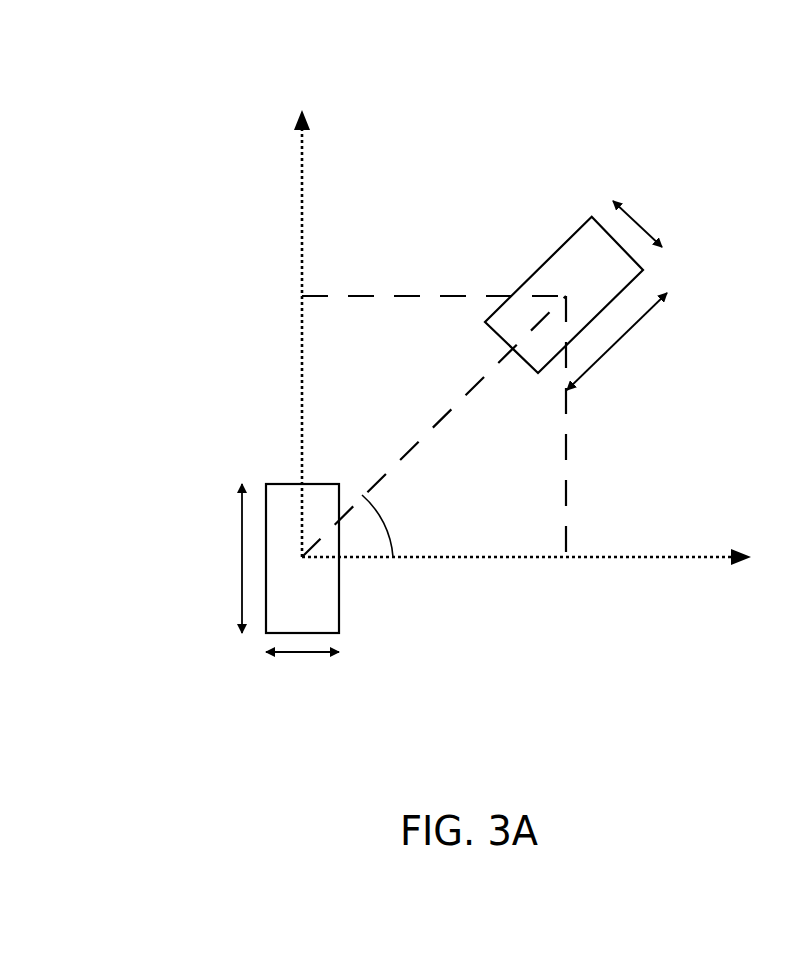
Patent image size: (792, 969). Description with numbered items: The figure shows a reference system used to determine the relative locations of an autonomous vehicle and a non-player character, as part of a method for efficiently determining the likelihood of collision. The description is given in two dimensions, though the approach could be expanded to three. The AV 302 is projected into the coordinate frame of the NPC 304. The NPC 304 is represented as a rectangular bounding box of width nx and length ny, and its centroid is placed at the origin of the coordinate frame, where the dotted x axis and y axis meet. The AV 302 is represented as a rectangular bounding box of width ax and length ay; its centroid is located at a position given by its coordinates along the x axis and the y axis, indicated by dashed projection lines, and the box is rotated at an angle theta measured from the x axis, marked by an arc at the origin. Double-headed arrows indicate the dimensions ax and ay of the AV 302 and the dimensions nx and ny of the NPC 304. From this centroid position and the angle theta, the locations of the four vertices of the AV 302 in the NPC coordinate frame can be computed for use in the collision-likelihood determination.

The AV 302 is at (562, 219).
The NPC 304 is at (371, 596).
The x coordinate x is at (526, 578).
The y coordinate y is at (290, 333).
The angle theta is at (388, 526).
The width of the AV bounding box ax is at (641, 222).
The length of the AV bounding box ay is at (617, 341).
The width of the NPC bounding box nx is at (302, 675).
The length of the NPC bounding box ny is at (222, 558).